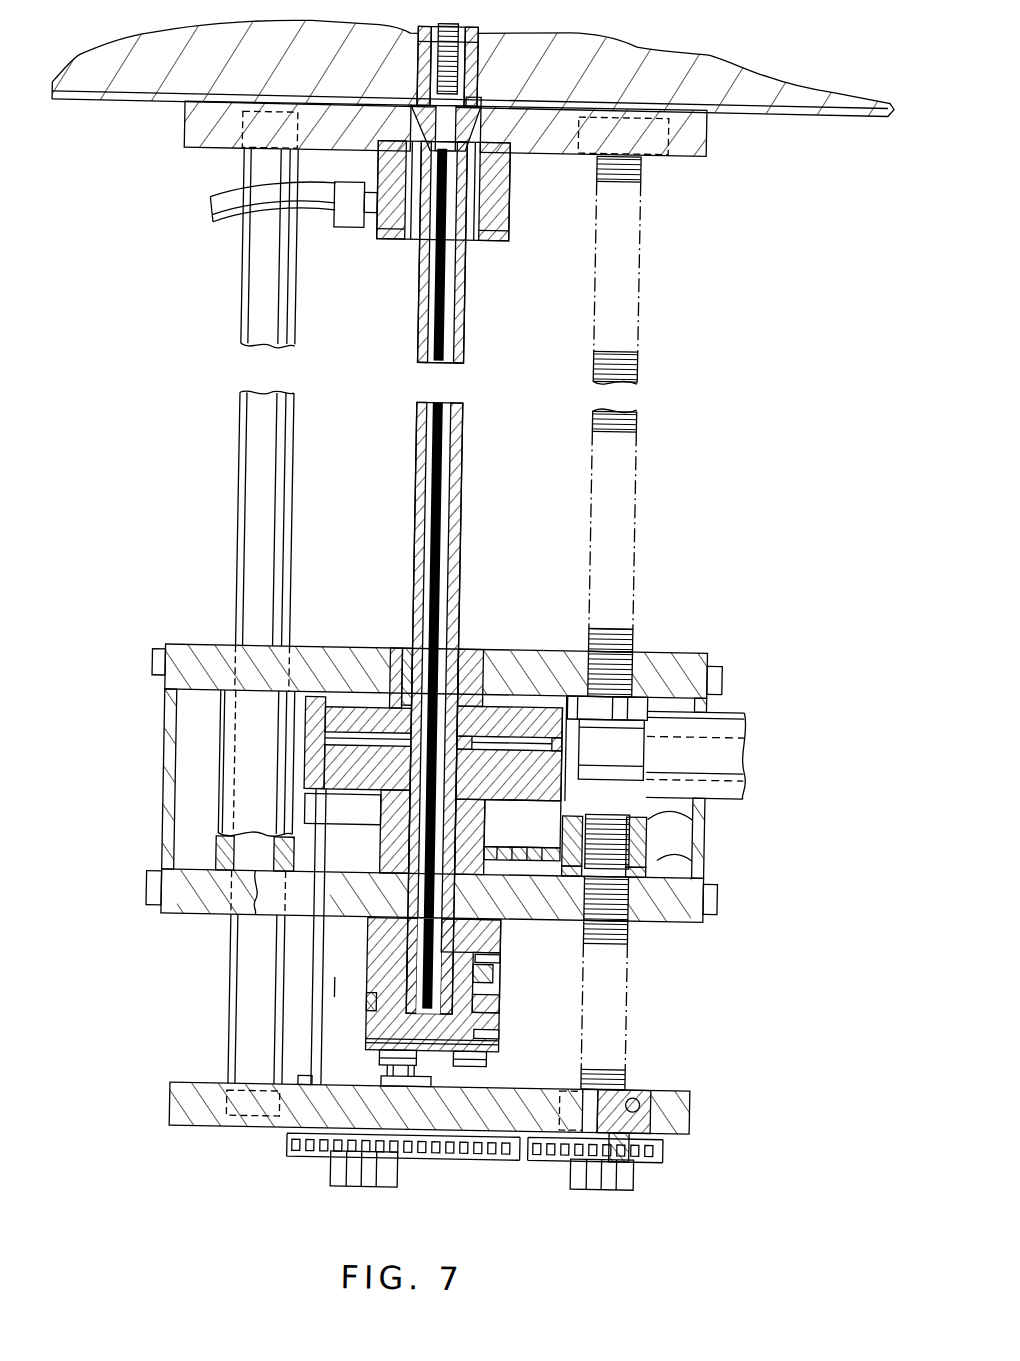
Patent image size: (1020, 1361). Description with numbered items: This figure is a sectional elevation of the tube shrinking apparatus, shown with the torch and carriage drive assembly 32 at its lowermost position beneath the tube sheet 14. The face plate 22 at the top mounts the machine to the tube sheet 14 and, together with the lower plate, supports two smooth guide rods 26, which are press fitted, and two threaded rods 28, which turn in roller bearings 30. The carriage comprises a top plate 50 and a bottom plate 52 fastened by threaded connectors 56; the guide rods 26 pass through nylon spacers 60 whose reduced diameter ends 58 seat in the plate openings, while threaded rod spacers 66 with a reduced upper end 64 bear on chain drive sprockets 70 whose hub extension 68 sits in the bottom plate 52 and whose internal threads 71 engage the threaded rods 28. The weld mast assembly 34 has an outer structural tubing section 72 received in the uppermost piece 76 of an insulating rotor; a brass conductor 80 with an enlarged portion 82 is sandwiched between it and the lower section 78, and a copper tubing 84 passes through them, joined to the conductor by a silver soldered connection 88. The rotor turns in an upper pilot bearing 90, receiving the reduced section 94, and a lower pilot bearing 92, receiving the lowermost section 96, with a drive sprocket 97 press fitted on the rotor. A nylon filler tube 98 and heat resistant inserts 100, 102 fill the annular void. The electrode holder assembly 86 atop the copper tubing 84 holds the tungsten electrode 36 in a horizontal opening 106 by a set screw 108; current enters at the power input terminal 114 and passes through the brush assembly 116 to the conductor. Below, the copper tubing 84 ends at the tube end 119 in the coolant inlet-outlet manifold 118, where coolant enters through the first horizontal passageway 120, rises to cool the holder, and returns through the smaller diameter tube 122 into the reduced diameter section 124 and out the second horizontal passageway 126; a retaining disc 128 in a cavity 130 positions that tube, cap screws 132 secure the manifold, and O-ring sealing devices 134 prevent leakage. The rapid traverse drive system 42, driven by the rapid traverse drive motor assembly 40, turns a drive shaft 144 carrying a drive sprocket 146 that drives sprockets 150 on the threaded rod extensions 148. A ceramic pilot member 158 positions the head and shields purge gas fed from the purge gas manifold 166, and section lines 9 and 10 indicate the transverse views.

The tube sheet 14 is at (117, 102).
The face plate 22 is at (179, 149).
The guide rods 26 is at (233, 432).
The threaded rods 28 is at (635, 371).
The roller bearings 30 is at (648, 154).
The torch and carriage drive assembly 32 is at (100, 723).
The weld mast assembly 34 is at (387, 461).
The tungsten electrode 36 is at (406, 84).
The rapid traverse drive motor assembly 40 is at (346, 1010).
The rapid traverse drive system 42 is at (494, 1182).
The top plate 50 is at (191, 648).
The bottom plate 52 is at (187, 919).
The threaded connectors 56 is at (152, 661).
The reduced diameter ends 58 is at (229, 647).
The spacers 60 is at (220, 770).
The upper end 64 is at (636, 653).
The threaded rod spacers 66 is at (705, 814).
The extension 68 is at (639, 905).
The chain drive sprocket 70 is at (706, 854).
The internal threads 71 is at (636, 905).
The outer structural tubing section 72 is at (456, 336).
The uppermost piece of rotor section 76 is at (503, 707).
The lower section of rotor 78 is at (516, 800).
The brass conductor 80 is at (362, 743).
The enlarged portion 82 is at (557, 729).
The copper tubing 84 is at (461, 441).
The electrode holder assembly 86 is at (465, 103).
The silver soldered connection 88 is at (484, 677).
The upper pilot bearing 90 is at (396, 652).
The lower pilot bearing 92 is at (478, 927).
The reduced section 94 is at (409, 652).
The lowermost section 96 is at (378, 926).
The drive sprocket 97 is at (392, 825).
The nylon filler tube 98 is at (450, 366).
The heat resistant insert 100 is at (457, 170).
The heat resistant insert 102 is at (462, 648).
The horizontal opening 106 is at (408, 107).
The set screw 108 is at (436, 34).
The power input terminal 114 is at (737, 709).
The brush assembly 116 is at (646, 733).
The coolant inlet-outlet manifold 118 is at (345, 986).
The end of the tube 119 is at (418, 954).
The first horizontal passageway 120 is at (495, 968).
The smaller diameter tube 122 is at (460, 268).
The reduced diameter section 124 is at (377, 1043).
The second horizontal passageway 126 is at (505, 1048).
The retaining disc 128 is at (503, 1011).
The cavity 130 is at (416, 1002).
The cap screws 132 is at (462, 1067).
The O-ring sealing devices 134 is at (488, 961).
The drive shaft 144 is at (298, 1132).
The drive sprocket 146 is at (339, 1170).
The extensions 148 is at (661, 1138).
The sprocket 150 is at (581, 1184).
The ceramic pilot member 158 is at (465, 39).
The purge gas manifold 166 is at (497, 233).
The section line 9- 9 is at (121, 825).
The section line 10- 10 is at (145, 1144).